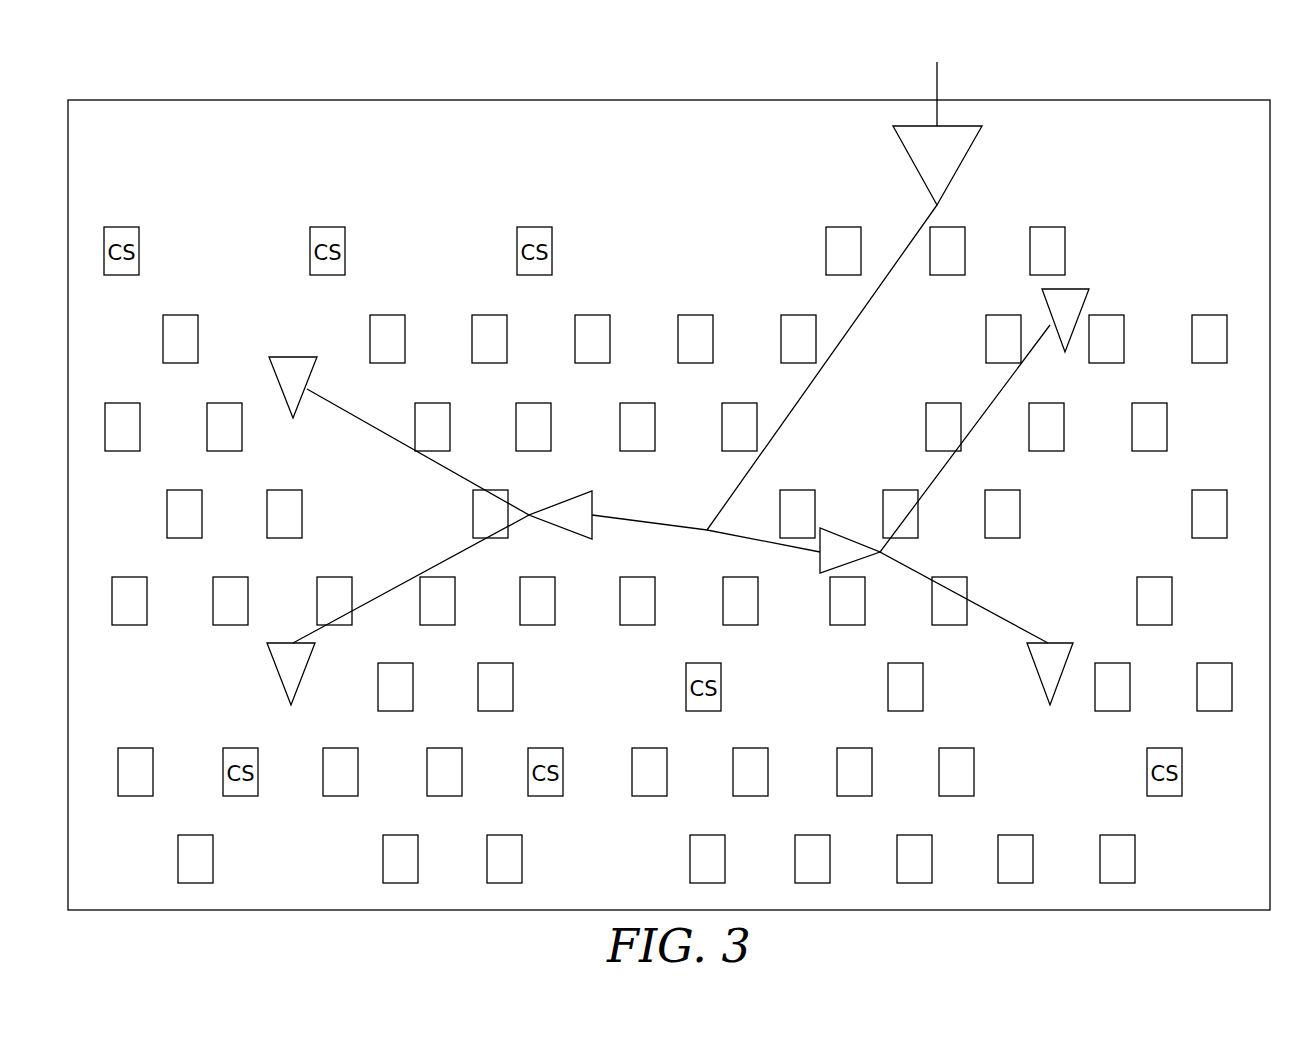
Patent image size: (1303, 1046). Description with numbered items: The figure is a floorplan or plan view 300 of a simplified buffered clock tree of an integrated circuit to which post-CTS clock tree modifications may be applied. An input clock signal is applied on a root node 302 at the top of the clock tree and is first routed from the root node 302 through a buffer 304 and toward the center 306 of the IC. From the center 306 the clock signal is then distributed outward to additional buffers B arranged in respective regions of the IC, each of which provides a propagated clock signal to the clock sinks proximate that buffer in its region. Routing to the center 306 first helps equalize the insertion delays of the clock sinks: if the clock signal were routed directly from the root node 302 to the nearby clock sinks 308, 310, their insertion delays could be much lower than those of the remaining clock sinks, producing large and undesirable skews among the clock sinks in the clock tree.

The plan view 300 is at (176, 81).
The root node 302 is at (936, 84).
The buffer 304 is at (962, 165).
The center 306 is at (707, 529).
The clock sink 308 is at (826, 245).
The clock sink 310 is at (1066, 248).